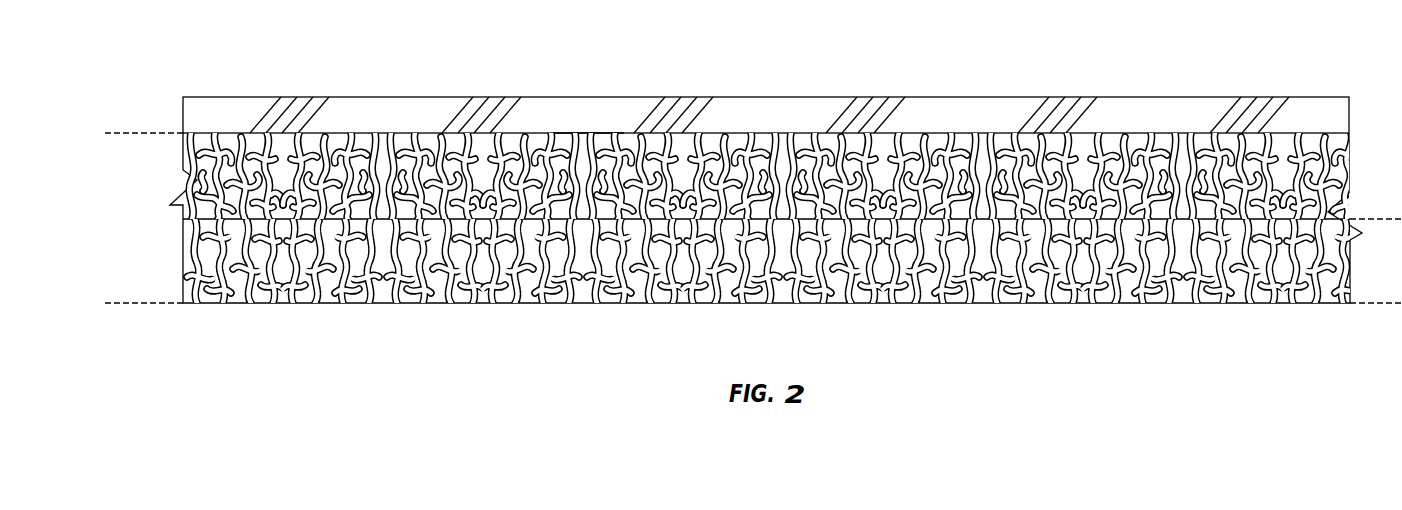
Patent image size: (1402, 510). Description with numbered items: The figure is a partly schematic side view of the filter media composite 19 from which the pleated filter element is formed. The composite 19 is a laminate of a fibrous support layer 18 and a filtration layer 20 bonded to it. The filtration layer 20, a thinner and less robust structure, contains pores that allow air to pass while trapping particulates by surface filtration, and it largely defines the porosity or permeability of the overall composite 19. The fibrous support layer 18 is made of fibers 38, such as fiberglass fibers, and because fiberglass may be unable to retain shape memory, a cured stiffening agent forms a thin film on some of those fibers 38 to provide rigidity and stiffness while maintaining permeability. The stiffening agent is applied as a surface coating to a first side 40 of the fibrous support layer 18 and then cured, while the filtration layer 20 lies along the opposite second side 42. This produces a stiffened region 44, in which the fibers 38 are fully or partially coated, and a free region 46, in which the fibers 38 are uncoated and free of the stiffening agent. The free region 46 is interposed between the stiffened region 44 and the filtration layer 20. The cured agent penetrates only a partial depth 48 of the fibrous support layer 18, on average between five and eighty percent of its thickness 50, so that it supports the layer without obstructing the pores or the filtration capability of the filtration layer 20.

The fibrous support layer 18 is at (105, 133).
The filter media composite 19 is at (781, 92).
The filtration layer 20 is at (945, 108).
The fibers 38 is at (624, 133).
The first side 40 is at (1336, 303).
The second side 42 is at (1349, 133).
The stiffened region 44 is at (1255, 245).
The free region 46 is at (332, 162).
The partial depth 48 is at (1388, 219).
The thickness 50 is at (145, 133).